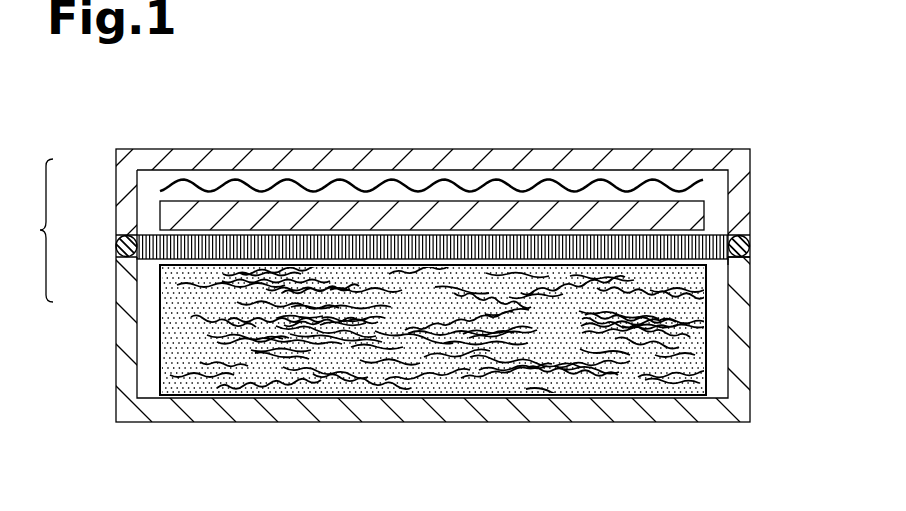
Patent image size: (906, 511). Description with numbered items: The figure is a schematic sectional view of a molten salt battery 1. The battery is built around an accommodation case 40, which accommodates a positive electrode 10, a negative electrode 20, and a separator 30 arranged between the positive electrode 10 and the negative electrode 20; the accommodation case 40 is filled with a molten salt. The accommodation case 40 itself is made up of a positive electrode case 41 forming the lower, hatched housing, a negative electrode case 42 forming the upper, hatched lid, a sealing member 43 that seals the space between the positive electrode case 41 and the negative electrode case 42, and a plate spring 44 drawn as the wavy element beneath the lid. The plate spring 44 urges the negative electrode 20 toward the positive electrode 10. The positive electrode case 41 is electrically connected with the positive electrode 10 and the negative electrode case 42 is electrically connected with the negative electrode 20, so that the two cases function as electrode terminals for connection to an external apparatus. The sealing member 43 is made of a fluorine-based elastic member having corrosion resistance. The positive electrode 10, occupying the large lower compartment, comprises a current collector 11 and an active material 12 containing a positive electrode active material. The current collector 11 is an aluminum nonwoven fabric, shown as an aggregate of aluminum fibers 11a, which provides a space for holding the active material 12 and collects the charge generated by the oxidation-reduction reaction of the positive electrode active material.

The molten salt battery 1 is at (138, 118).
The positive electrode 10 is at (707, 333).
The current collector 11 is at (550, 370).
The aluminum fibers 11a is at (610, 398).
The active material 12 is at (405, 373).
The negative electrode 20 is at (705, 203).
The separator 30 is at (712, 259).
The accommodation case 40 is at (28, 230).
The positive electrode case 41 is at (117, 305).
The negative electrode case 42 is at (117, 221).
The sealing member 43 is at (116, 247).
The plate spring 44 is at (160, 191).